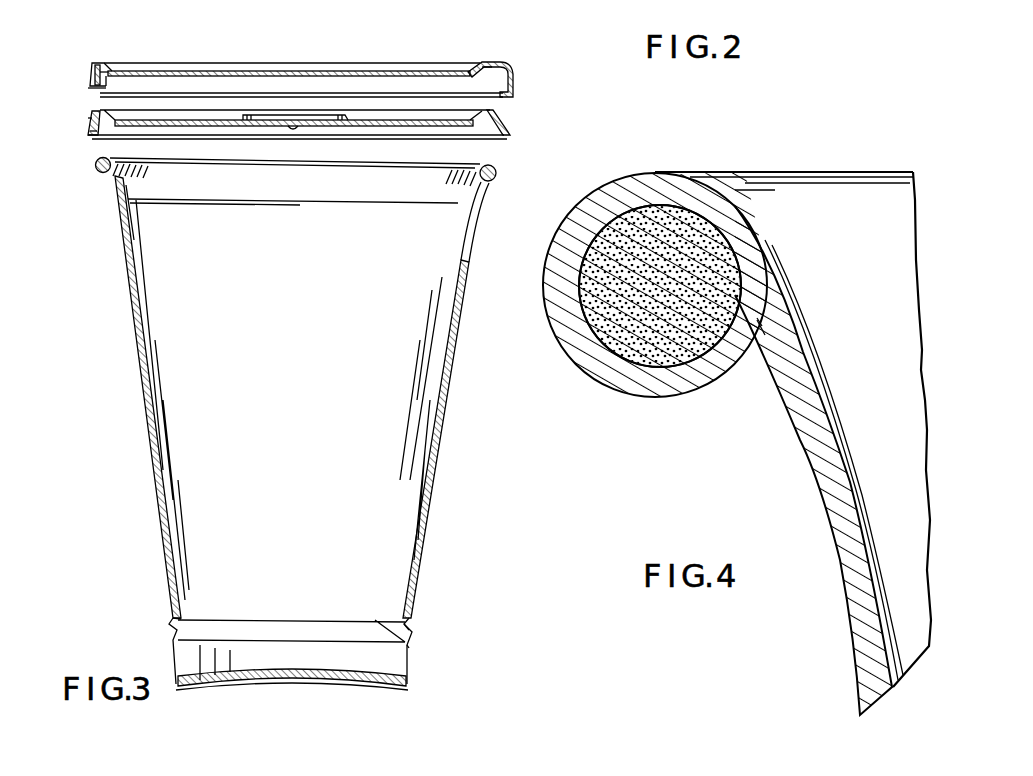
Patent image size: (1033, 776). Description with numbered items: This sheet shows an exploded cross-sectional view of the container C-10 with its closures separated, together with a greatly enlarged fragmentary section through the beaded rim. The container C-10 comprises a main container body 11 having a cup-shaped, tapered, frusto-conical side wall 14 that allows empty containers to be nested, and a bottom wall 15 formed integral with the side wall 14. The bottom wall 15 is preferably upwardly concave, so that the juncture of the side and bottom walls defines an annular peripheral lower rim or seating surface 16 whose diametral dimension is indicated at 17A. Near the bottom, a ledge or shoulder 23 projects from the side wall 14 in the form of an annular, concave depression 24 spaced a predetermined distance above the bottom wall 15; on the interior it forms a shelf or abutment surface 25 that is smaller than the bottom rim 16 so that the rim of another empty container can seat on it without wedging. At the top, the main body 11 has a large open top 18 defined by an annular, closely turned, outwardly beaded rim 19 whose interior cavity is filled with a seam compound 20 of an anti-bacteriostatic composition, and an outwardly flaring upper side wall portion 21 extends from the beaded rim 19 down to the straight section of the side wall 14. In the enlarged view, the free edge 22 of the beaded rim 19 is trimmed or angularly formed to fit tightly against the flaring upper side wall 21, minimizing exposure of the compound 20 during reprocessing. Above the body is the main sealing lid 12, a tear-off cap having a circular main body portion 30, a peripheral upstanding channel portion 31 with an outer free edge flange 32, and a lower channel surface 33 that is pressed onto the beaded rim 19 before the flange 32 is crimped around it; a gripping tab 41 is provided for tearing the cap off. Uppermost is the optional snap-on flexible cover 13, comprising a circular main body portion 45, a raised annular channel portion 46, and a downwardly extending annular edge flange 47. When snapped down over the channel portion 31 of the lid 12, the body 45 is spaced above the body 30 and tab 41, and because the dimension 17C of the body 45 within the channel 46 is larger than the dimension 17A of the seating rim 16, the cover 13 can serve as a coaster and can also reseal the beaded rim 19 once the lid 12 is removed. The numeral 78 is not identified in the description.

In FIG. 3, the container C-10 is at (514, 120).
In FIG. 3, the main container body 11 is at (315, 426).
In FIG. 4, the main container body 11 is at (815, 460).
In FIG. 3, the main closure plate or sealing lid 12 is at (320, 152).
In FIG. 3, the removable snap-on flexible closure or cover 13 is at (304, 69).
In FIG. 3, the side wall 14 is at (445, 388).
In FIG. 4, the side wall 14 is at (850, 635).
In FIG. 3, the bottom wall 15 is at (268, 674).
In FIG. 3, the annular peripheral lower rim or seating surface 16 is at (406, 694).
In FIG. 3, the diametral dimension of the annular seating surface 17A is at (407, 692).
In FIG. 3, the diametral or circumferential area of the circular body of the cover 17C is at (477, 64).
In FIG. 3, the open top 18 is at (315, 201).
In FIG. 4, the open top 18 is at (737, 401).
In FIG. 3, the outwardly beaded rim 19 is at (102, 180).
In FIG. 4, the outwardly beaded rim 19 is at (665, 388).
In FIG. 3, the seam compound 20 is at (494, 172).
In FIG. 4, the seam compound 20 is at (633, 340).
In FIG. 3, the outwardly flaring upper side wall portion 21 is at (478, 195).
In FIG. 4, the outwardly flaring upper side wall portion 21 is at (780, 383).
In FIG. 4, the free edge of the beaded rim 22 is at (757, 320).
In FIG. 3, the ledge or shoulder 23 is at (180, 616).
In FIG. 3, the annular concave depression 24 is at (408, 632).
In FIG. 3, the shelf or abutment surface 25 is at (408, 647).
In FIG. 3, the circular main body portion of the sealing cap 30 is at (374, 118).
In FIG. 3, the peripheral annular upstanding channel portion 31 is at (93, 112).
In FIG. 3, the outer free edge flange 32 is at (92, 118).
In FIG. 3, the lower channel surface 33 is at (97, 133).
In FIG. 3, the gripping tab 41 is at (246, 110).
In FIG. 3, the circular main body portion of the cover 45 is at (372, 72).
In FIG. 3, the upstanding or raised annular channel portion 46 is at (490, 70).
In FIG. 3, the downwardly extending annular edge flange 47 is at (90, 72).
In FIG. 3, the upper lid flange 78 is at (88, 88).